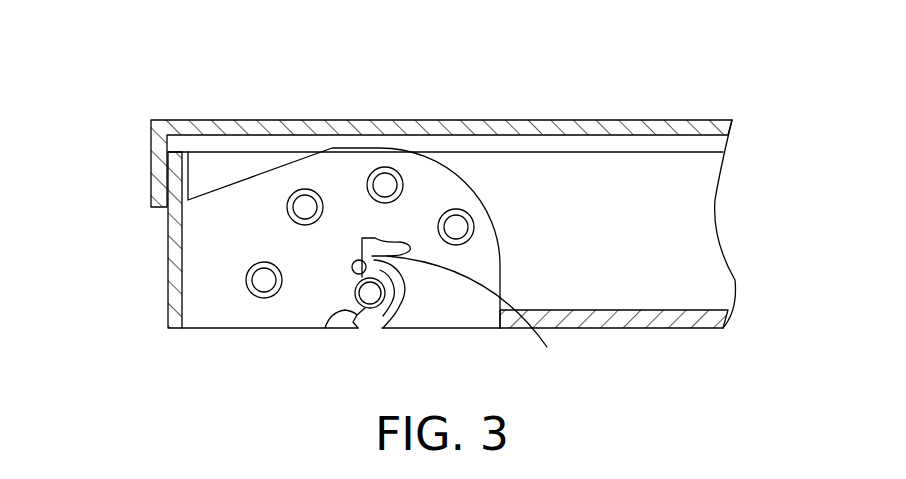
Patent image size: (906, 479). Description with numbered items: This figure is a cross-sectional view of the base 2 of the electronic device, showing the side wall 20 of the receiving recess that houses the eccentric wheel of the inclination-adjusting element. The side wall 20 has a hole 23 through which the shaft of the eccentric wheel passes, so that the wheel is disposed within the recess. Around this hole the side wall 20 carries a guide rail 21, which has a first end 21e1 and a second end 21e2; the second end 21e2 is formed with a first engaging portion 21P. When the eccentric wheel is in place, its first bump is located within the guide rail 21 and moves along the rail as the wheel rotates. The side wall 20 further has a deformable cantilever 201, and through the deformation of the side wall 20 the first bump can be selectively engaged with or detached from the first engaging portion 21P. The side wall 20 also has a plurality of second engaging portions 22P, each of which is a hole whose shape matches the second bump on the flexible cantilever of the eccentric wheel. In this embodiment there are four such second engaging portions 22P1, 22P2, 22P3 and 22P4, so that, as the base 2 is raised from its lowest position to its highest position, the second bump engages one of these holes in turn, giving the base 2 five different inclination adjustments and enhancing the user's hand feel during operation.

The base 2 is at (128, 60).
The side wall 20 is at (494, 264).
The deformable cantilever 201 is at (481, 316).
The guide rail 21 is at (405, 305).
The first end 21e1 is at (327, 326).
The second end 21e2 is at (357, 264).
The first engaging portion 21P is at (397, 267).
The second engaging portions 22P is at (485, 80).
The second engaging portion 22P1 is at (456, 209).
The second engaging portion 22P2 is at (385, 167).
The second engaging portion 22P3 is at (305, 189).
The second engaging portion 22P4 is at (264, 262).
The hole 23 is at (390, 316).